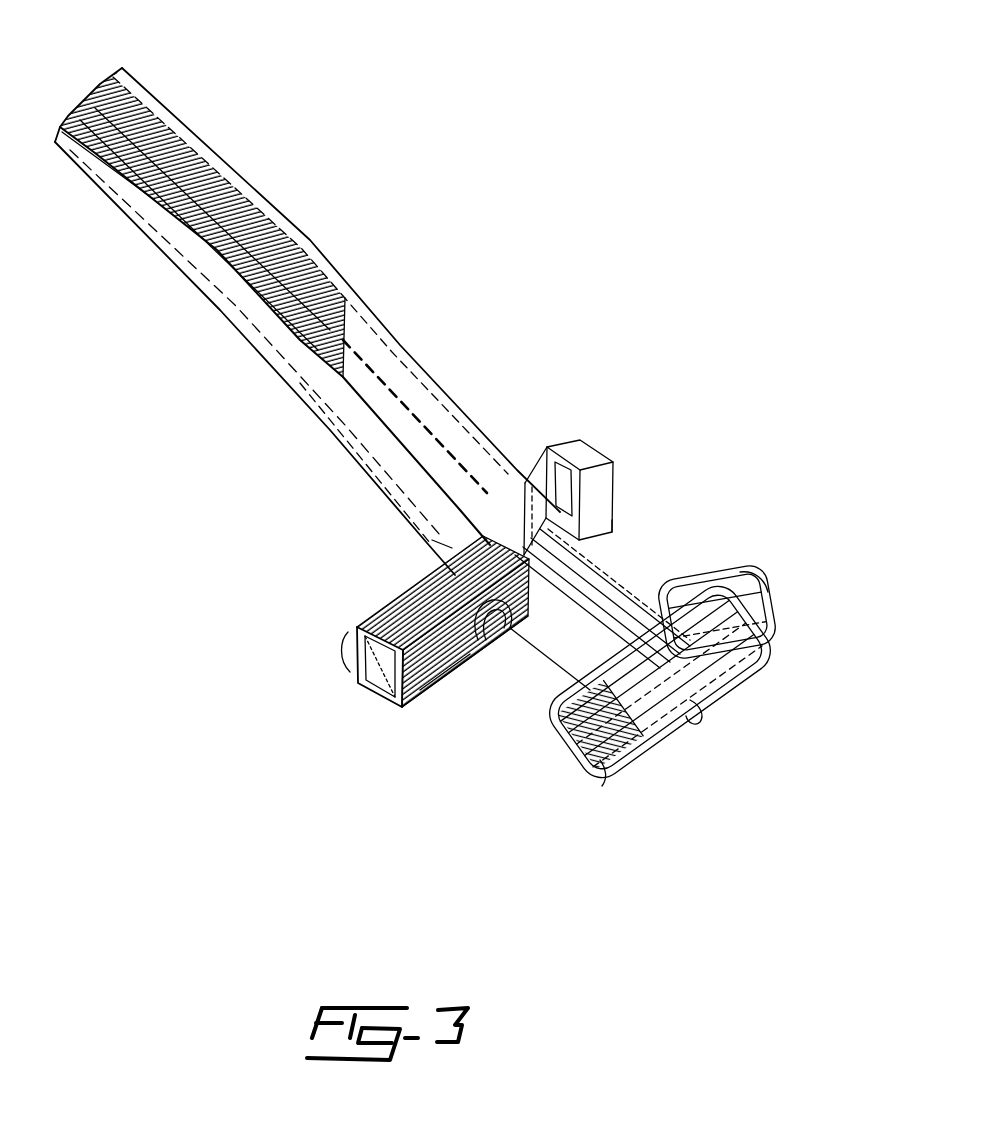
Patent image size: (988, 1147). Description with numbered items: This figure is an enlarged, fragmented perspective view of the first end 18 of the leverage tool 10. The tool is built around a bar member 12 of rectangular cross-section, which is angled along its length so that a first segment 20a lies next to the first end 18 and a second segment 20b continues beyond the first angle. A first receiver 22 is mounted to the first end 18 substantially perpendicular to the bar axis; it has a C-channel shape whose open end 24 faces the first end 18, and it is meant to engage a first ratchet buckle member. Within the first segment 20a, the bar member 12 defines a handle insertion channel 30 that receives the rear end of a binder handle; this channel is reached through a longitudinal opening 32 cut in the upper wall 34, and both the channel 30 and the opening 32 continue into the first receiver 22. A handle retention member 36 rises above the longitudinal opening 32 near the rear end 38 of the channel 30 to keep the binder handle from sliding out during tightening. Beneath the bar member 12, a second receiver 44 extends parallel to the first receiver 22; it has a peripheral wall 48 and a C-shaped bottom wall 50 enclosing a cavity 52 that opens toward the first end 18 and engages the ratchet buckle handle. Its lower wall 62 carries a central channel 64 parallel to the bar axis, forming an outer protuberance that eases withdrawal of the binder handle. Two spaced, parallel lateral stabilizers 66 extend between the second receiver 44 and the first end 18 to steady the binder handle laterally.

The leverage tool 10 is at (360, 162).
The bar member 12 is at (150, 90).
The first end 18 is at (700, 563).
The first segment 20a is at (524, 680).
The second segment 20b is at (190, 125).
The first receiver 22 is at (757, 590).
The open end 24 is at (685, 745).
The handle insertion channel 30 is at (600, 602).
The longitudinal opening 32 is at (517, 505).
The upper wall 34 is at (367, 340).
The handle retention member 36 is at (610, 517).
The rear end 38 is at (440, 545).
The second receiver 44 is at (357, 672).
The peripheral wall 48 is at (380, 595).
The C-shaped bottom wall 50 is at (345, 650).
The cavity 52 is at (440, 668).
The lower wall 62 is at (413, 700).
The channel 64 is at (507, 655).
The binder handle lateral stabilizers 66 is at (710, 710).